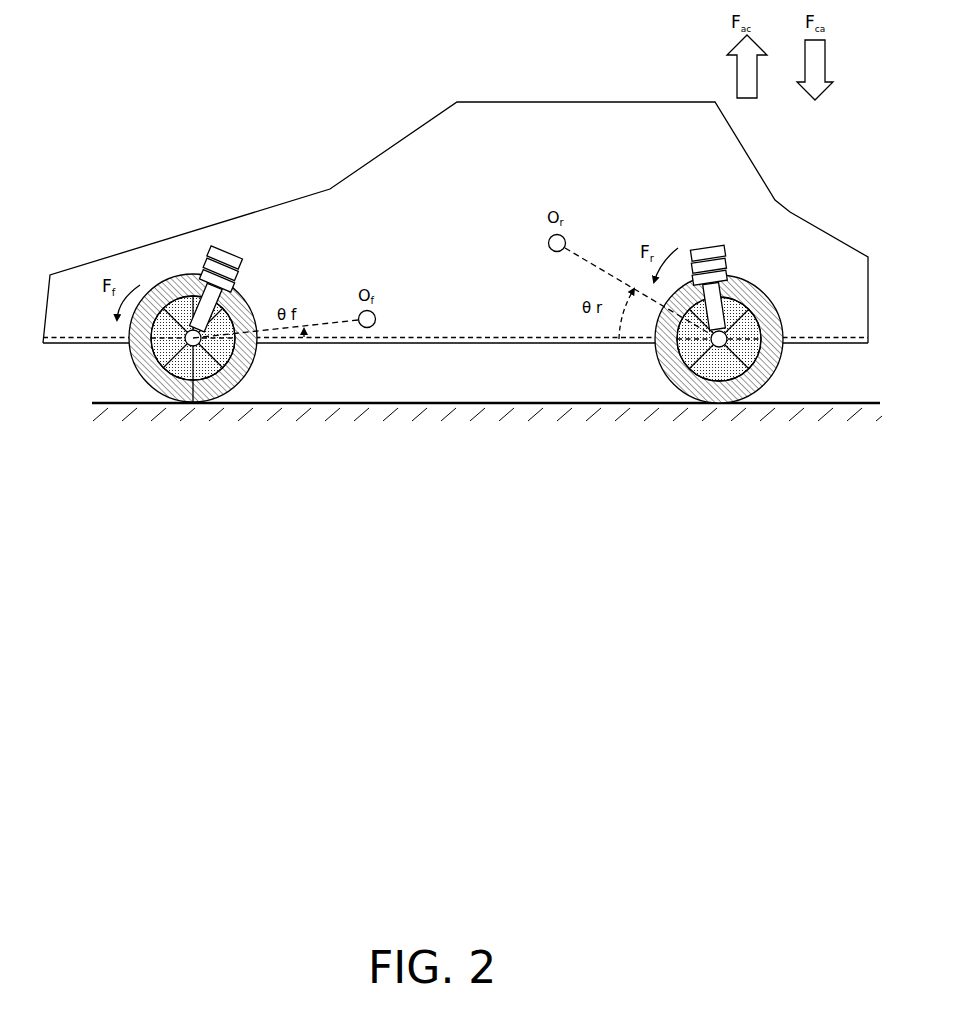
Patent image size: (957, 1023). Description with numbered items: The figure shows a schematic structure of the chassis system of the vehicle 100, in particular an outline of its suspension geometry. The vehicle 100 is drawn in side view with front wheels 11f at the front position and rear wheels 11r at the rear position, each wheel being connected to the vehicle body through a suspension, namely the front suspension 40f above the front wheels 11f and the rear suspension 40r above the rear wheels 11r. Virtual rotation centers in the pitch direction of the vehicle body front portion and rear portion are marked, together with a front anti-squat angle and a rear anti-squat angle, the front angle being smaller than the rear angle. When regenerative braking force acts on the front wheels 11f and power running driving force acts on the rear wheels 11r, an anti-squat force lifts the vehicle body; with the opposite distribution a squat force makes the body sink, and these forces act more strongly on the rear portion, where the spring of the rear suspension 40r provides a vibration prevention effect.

The vehicle 100 is at (509, 97).
The front wheels 11f is at (193, 403).
The rear wheels 11r is at (720, 403).
The front suspension 40f is at (230, 247).
The rear suspension 40r is at (709, 247).